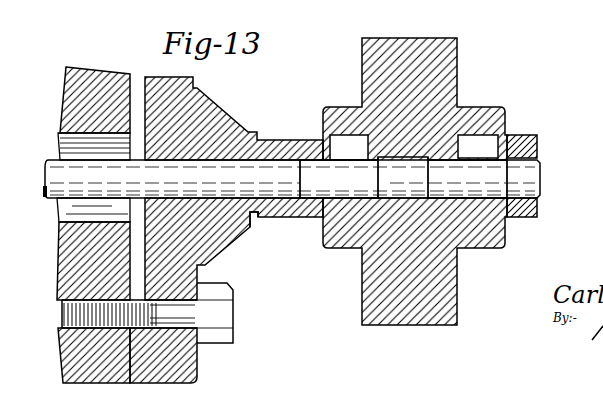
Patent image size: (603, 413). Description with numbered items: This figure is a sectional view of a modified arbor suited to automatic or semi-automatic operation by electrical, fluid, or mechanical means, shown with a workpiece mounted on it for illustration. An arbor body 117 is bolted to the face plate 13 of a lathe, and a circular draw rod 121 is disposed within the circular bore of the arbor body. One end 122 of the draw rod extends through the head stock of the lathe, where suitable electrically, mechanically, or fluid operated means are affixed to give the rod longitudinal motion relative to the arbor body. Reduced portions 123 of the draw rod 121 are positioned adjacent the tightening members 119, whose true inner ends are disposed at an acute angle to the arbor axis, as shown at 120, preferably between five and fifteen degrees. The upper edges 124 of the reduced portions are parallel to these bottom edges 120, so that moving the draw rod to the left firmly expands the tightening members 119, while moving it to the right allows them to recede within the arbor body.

The face plate 13 is at (103, 72).
The arbor body 117 is at (263, 224).
The tightening members 119 is at (353, 138).
The inner ends of tightening members 120 is at (343, 160).
The draw rod 121 is at (541, 172).
The draw rod end 122 is at (47, 160).
The reduced portions of draw rod 123 is at (324, 187).
The upper edges of reduced portions 124 is at (349, 162).